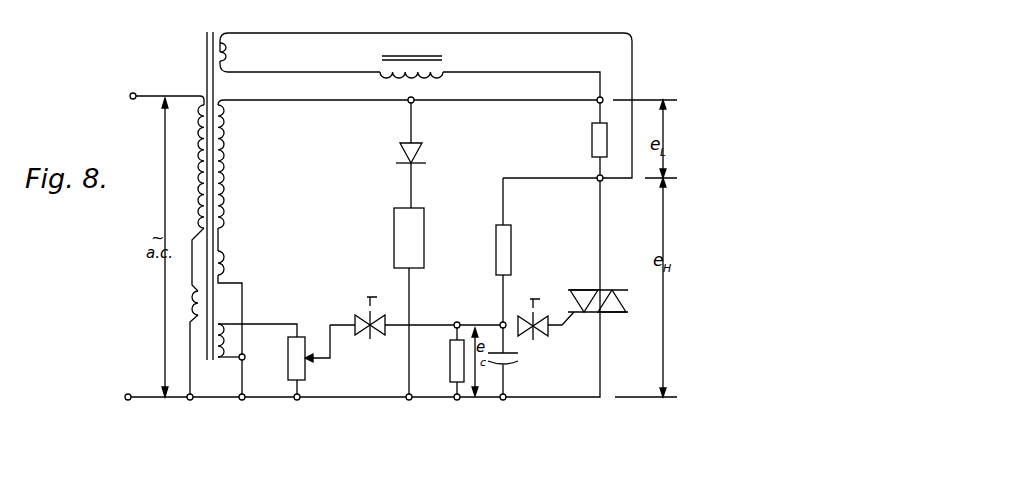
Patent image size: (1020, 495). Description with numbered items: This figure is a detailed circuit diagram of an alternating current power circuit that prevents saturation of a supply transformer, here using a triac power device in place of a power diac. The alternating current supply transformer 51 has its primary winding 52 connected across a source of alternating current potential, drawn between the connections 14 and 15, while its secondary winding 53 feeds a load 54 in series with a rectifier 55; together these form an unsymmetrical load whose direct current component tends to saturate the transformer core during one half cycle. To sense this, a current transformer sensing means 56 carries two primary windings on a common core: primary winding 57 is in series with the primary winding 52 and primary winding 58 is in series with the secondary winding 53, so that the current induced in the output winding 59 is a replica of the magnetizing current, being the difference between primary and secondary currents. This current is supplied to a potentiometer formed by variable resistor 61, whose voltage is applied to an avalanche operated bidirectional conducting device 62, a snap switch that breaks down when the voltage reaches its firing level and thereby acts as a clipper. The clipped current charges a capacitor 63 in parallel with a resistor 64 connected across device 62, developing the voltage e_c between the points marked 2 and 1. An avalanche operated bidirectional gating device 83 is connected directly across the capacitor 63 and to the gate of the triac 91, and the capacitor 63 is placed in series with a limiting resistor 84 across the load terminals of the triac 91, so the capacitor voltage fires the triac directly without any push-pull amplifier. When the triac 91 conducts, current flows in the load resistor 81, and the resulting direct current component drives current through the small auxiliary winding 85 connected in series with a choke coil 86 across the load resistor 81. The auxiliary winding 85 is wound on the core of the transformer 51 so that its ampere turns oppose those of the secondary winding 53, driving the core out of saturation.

The input terminal 14 is at (148, 96).
The input terminal 15 is at (135, 399).
The small auxiliary winding 85 is at (233, 55).
The choke coil 86 is at (440, 70).
The secondary winding 53 is at (230, 157).
The primary winding 52 is at (198, 166).
The alternating current supply transformer 51 is at (214, 250).
The current transformer sensing means 56 is at (214, 385).
The primary winding 58 is at (230, 266).
The primary winding 57 is at (194, 308).
The output winding 59 is at (226, 327).
The rectifier 55 is at (421, 156).
The load 54 is at (424, 240).
The limiting resistor 84 is at (511, 240).
The load resistor 81 is at (592, 136).
The triac bidirectional conductivity controlled conducting device 91 is at (612, 290).
The avalanche operated bidirectional gating device 83 is at (546, 334).
The capacitor 63 is at (516, 364).
The resistor 64 is at (450, 375).
The avalanche operated conductivity controlled bidirectional conducting device 62 is at (370, 340).
The variable resistor 61 is at (305, 378).
The circuit node 2 is at (500, 322).
The circuit node 1 is at (505, 400).